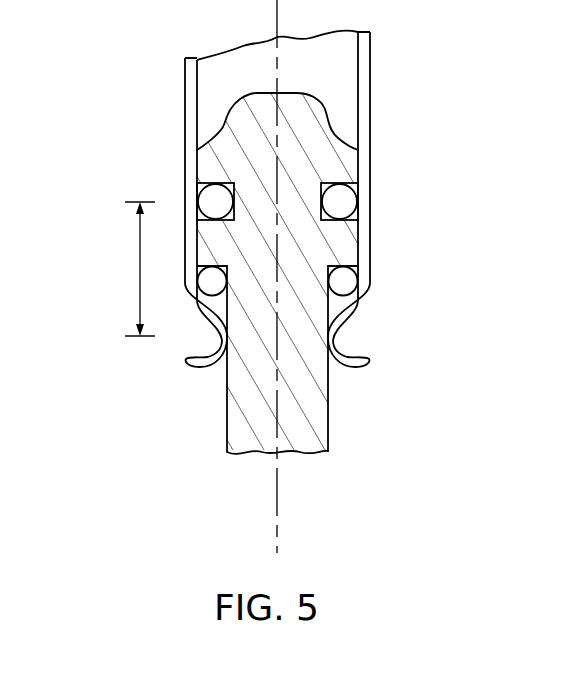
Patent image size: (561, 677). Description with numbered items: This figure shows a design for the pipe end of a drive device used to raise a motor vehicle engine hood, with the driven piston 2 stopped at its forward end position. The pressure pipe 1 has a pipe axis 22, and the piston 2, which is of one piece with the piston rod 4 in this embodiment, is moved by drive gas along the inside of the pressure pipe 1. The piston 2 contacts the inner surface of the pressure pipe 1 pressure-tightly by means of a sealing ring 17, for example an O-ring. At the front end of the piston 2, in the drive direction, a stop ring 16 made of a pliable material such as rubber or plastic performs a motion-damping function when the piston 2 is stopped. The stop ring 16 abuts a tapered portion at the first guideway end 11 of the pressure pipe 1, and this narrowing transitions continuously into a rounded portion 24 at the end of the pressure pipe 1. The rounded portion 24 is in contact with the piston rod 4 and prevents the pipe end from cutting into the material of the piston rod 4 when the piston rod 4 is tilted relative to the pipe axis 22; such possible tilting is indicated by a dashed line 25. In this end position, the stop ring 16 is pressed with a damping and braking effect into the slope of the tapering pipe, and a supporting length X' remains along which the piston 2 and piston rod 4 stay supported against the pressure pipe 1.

The pressure pipe 1 is at (185, 105).
The piston 2 is at (205, 158).
The piston rod 4 is at (240, 418).
The first guideway end 11 is at (172, 349).
The stop ring 16 is at (343, 282).
The sealing ring 17 is at (340, 201).
The pipe axis 22 is at (275, 62).
The rounded portion 24 is at (332, 337).
The dashed line 25 is at (343, 58).
The axial distance X' is at (111, 269).